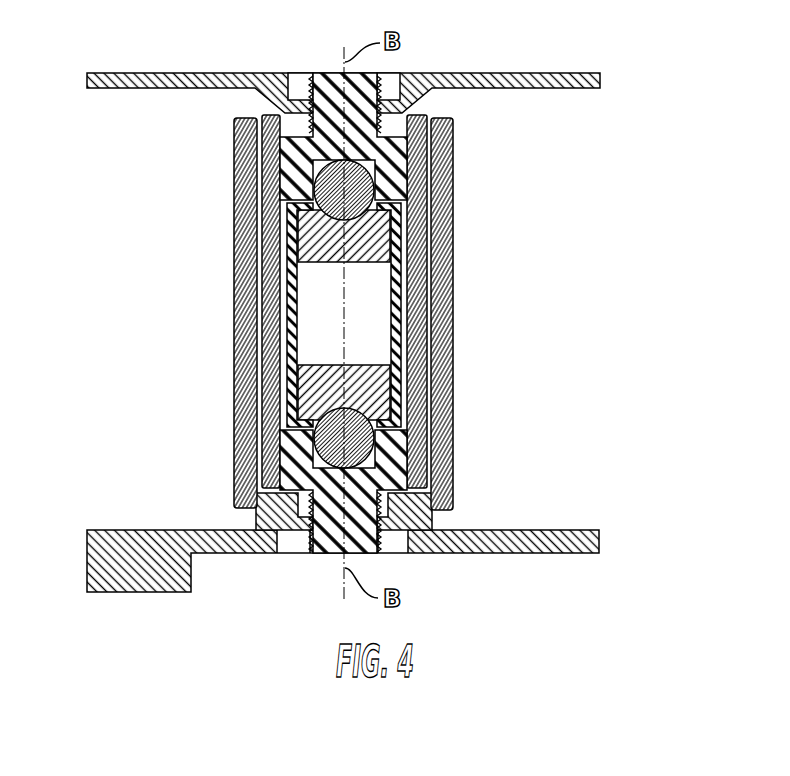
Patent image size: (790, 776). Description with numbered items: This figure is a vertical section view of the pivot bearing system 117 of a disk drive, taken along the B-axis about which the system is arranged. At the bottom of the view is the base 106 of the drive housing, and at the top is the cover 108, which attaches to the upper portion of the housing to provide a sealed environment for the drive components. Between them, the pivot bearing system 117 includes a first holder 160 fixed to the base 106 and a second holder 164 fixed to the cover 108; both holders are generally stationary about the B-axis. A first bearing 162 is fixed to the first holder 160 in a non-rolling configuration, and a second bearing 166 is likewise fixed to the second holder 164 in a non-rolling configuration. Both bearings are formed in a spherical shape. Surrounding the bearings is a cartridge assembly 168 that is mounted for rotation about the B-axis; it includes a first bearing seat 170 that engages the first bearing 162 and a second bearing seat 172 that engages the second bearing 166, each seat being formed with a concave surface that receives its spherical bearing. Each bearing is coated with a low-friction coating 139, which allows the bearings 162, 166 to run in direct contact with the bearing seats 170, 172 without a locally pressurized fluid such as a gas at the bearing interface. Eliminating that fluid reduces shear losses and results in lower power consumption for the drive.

The base 106 is at (548, 540).
The cover 108 is at (589, 82).
The pivot bearing system 117 is at (592, 241).
The low-friction coating 139 is at (397, 210).
The first holder 160 is at (400, 477).
The first bearing 162 is at (385, 428).
The second holder 164 is at (392, 150).
The second bearing 166 is at (360, 190).
The cartridge assembly 168 is at (218, 295).
The first bearing seat 170 is at (310, 400).
The second bearing seat 172 is at (308, 245).